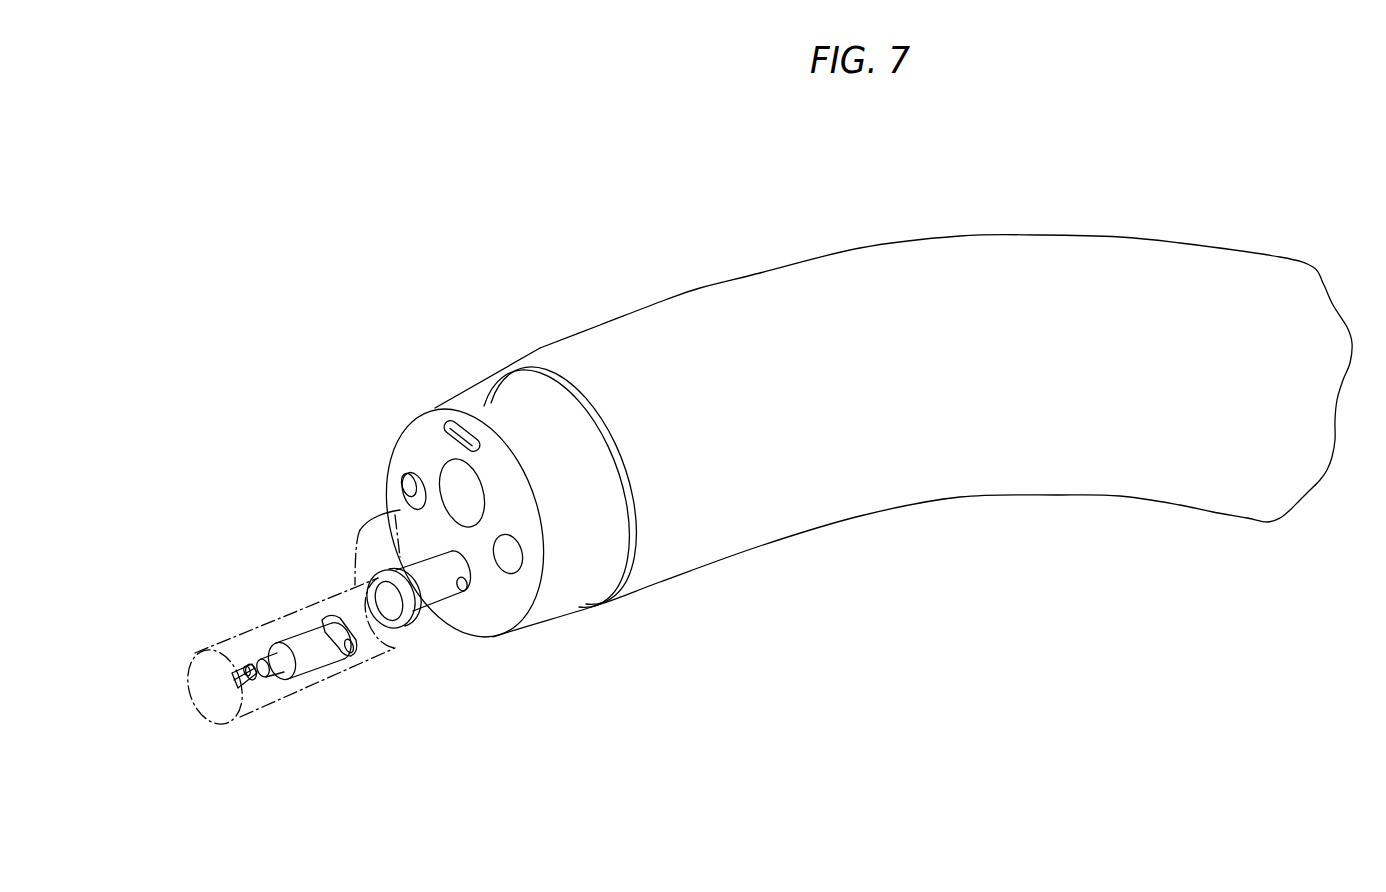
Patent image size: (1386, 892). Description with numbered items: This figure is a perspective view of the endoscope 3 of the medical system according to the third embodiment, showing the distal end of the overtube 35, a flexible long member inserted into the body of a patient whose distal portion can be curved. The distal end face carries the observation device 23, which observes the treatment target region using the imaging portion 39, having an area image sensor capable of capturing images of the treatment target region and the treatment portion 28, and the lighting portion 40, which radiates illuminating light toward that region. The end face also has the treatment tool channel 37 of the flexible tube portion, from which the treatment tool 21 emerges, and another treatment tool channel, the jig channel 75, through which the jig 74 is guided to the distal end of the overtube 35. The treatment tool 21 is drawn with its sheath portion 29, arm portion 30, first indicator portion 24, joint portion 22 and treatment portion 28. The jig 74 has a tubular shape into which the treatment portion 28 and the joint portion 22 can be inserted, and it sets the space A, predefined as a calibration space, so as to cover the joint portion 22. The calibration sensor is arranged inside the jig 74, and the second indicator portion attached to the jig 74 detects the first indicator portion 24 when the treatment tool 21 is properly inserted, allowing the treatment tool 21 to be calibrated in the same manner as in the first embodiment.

The endoscope 3 is at (1057, 168).
The overtube 35 is at (725, 307).
The observation device 23 is at (498, 491).
The lighting portion 40 is at (451, 421).
The imaging portion 39 is at (446, 470).
The jig channel 75 is at (405, 490).
The treatment tool channel 37 is at (467, 598).
The sheath portion 29 is at (423, 602).
The treatment tool 21 is at (302, 620).
The joint portion 22 is at (350, 641).
The first indicator portion 24 is at (346, 658).
The arm portion 30 is at (305, 663).
The treatment portion 28 is at (193, 700).
The jig 74 is at (220, 643).
The space A is at (190, 661).